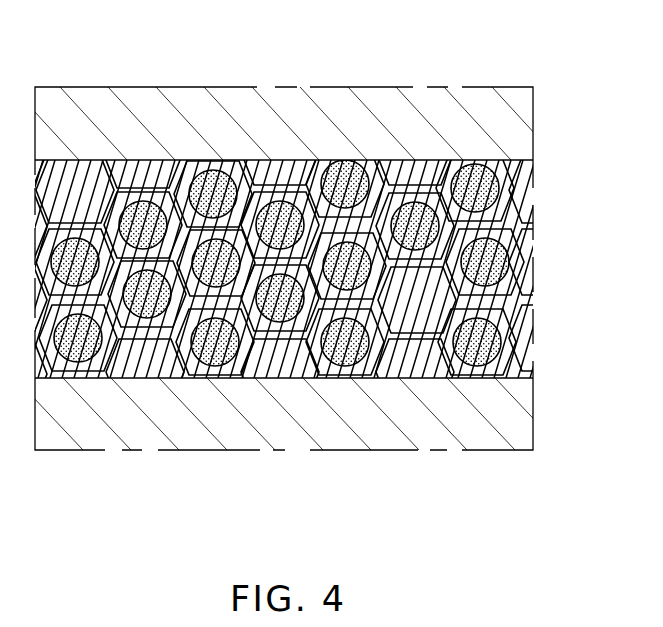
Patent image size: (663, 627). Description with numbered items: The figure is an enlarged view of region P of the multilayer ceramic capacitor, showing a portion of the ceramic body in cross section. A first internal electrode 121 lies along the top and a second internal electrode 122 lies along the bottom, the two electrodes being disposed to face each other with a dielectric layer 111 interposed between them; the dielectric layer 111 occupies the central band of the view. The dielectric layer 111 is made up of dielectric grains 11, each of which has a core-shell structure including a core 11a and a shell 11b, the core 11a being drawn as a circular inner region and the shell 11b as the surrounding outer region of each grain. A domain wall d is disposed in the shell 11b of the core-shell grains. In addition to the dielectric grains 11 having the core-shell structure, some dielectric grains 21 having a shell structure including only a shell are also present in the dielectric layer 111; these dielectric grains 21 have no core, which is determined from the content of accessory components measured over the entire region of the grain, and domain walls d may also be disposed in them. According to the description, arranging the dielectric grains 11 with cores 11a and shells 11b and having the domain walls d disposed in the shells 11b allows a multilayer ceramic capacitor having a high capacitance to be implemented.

The first internal electrode 121 is at (513, 112).
The second internal electrode 122 is at (511, 415).
The dielectric layer 111 is at (300, 288).
The dielectric grain having a shell structure 21 is at (135, 372).
The dielectric grain 11 is at (293, 326).
The core 11a is at (366, 353).
The shell 11b is at (380, 355).
The domain wall d is at (412, 180).
The region P is at (300, 297).